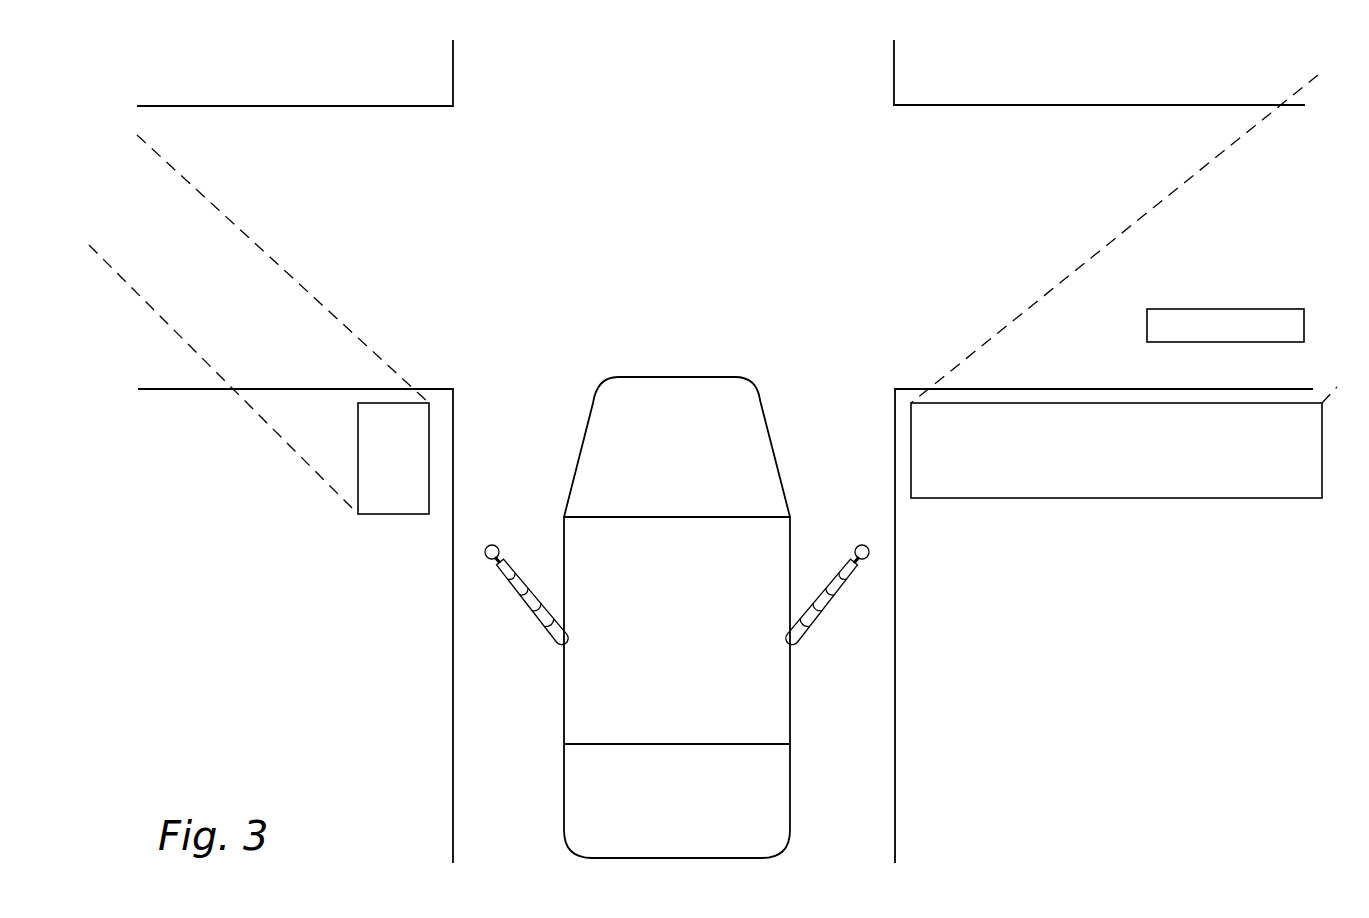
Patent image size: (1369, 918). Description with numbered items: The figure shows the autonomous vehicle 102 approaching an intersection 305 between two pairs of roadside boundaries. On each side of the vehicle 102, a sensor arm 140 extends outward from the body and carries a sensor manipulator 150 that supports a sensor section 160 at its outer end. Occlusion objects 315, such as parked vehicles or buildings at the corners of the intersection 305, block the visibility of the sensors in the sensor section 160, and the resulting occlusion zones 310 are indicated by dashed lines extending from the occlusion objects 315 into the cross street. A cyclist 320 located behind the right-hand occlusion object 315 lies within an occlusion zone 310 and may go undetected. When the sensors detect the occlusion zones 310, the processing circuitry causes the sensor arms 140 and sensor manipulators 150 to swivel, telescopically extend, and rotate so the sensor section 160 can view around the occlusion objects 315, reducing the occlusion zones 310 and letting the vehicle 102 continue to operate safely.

The autonomous vehicle 102 is at (689, 373).
The sensor arm 140 is at (545, 625).
The sensor manipulator 150 is at (497, 560).
The sensor section 160 is at (500, 548).
The intersection 305 is at (517, 130).
The occlusion zone 310 is at (264, 302).
The occlusion object 315 is at (392, 515).
The cyclist 320 is at (1195, 308).